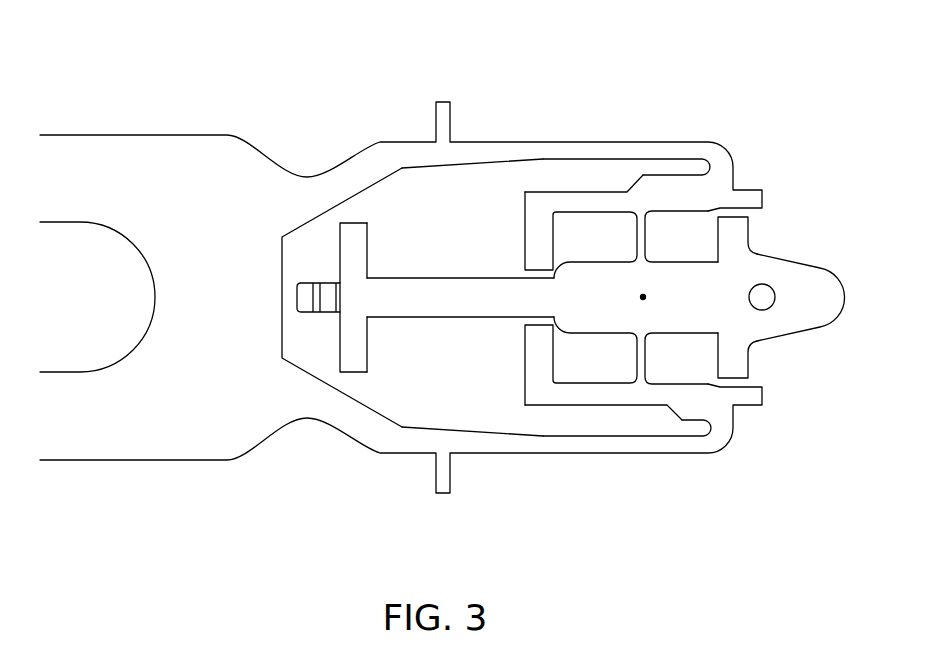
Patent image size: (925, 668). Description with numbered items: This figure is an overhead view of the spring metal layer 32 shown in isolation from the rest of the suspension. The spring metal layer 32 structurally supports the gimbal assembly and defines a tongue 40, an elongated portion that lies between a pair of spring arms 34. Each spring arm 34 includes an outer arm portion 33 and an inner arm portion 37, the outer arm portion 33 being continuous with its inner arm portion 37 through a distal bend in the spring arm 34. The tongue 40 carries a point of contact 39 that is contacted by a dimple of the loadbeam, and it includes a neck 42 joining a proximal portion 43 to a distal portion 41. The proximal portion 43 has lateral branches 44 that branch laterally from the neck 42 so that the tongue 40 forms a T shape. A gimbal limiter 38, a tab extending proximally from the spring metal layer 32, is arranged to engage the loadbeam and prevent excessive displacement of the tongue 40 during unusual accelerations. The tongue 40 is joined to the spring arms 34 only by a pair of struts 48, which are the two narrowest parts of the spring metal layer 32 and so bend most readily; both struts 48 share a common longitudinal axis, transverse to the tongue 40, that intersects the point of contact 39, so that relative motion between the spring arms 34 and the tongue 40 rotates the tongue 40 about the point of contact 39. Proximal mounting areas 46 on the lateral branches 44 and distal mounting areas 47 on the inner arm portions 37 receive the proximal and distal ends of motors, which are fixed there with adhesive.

The spring metal layer 32 is at (600, 530).
The outer arm portion 33 is at (692, 148).
The spring arm 34 is at (545, 152).
The inner arm portion 37 is at (678, 192).
The gimbal limiter 38 is at (302, 297).
The point of contact 39 is at (643, 297).
The tongue 40 is at (783, 335).
The distal portion 41 is at (747, 272).
The neck 42 is at (458, 297).
The proximal portion 43 is at (375, 297).
The lateral branch 44 is at (342, 237).
The proximal mounting area 46 is at (355, 268).
The distal mounting area 47 is at (533, 240).
The strut 48 is at (642, 240).